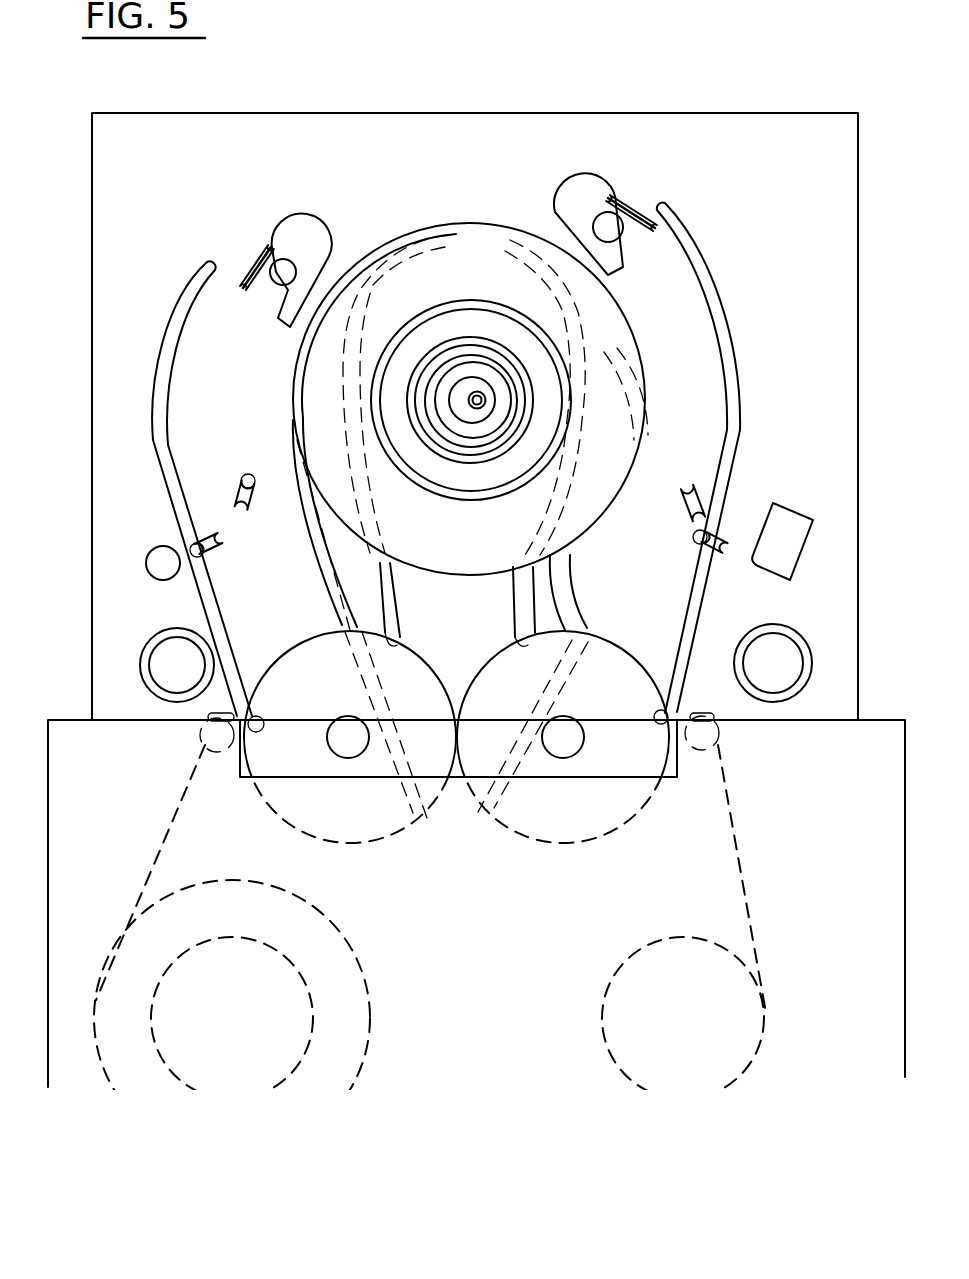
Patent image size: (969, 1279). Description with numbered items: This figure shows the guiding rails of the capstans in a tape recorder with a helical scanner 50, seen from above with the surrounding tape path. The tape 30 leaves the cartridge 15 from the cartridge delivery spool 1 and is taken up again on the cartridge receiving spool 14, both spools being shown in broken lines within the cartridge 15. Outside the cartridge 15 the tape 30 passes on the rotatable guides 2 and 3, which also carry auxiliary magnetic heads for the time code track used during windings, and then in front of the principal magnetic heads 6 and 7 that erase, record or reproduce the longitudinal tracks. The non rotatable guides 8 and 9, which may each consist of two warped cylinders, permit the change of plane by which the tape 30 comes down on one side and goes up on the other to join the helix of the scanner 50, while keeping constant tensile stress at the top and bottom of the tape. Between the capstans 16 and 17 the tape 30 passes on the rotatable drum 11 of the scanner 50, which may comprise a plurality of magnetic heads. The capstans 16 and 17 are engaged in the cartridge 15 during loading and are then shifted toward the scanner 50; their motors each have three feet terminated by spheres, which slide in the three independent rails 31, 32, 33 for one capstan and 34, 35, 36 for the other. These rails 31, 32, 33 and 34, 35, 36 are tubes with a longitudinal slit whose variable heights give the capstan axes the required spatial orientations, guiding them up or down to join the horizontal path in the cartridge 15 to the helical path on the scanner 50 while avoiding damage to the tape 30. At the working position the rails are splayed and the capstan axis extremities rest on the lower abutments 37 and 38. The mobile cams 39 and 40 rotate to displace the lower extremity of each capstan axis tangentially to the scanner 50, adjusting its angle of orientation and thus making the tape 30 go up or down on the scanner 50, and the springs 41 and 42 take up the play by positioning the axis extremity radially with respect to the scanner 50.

The cartridge delivery spool 1 is at (355, 955).
The guide 2 is at (167, 653).
The guide 3 is at (775, 657).
The principal magnetic head 6 is at (162, 546).
The principal magnetic head 7 is at (790, 523).
The non rotatable guide 8 is at (240, 533).
The non rotatable guide 9 is at (692, 537).
The rotatable drum 11 is at (468, 253).
The cartridge receiving spool 14 is at (627, 957).
The cartridge 15 is at (848, 762).
The capstan 16 is at (348, 745).
The capstan 17 is at (563, 745).
The tape 30 is at (152, 853).
The rail 31 is at (163, 343).
The rail 32 is at (347, 587).
The rail 33 is at (392, 600).
The rail 34 is at (523, 595).
The rail 35 is at (565, 583).
The rail 36 is at (725, 336).
The lower abutment 37 is at (297, 232).
The lower abutment 38 is at (577, 197).
The mobile cam 39 is at (284, 267).
The mobile cam 40 is at (611, 226).
The spring 41 is at (250, 270).
The spring 42 is at (655, 230).
The scanner 50 is at (282, 366).